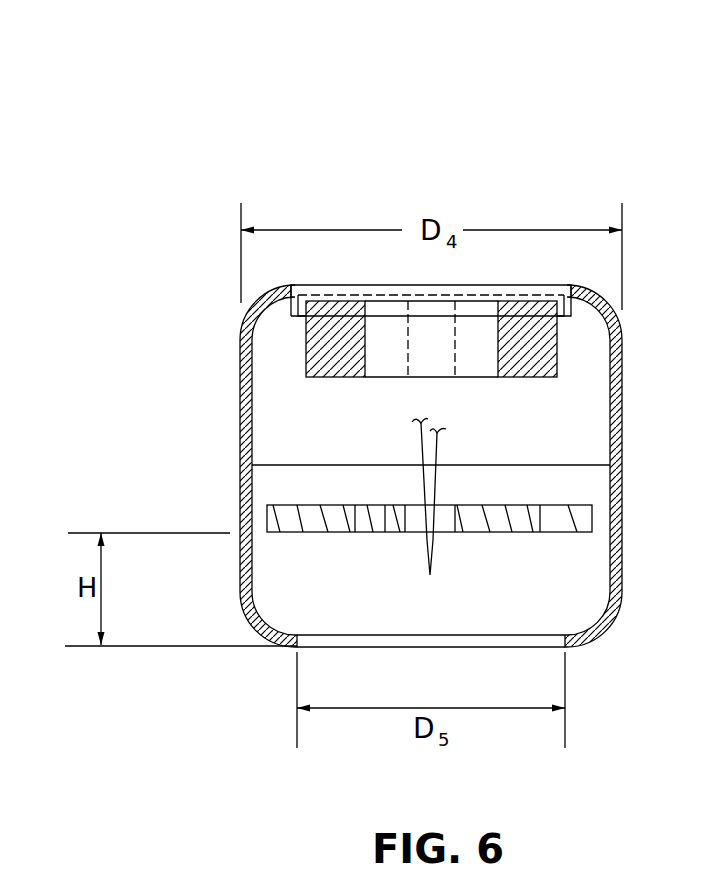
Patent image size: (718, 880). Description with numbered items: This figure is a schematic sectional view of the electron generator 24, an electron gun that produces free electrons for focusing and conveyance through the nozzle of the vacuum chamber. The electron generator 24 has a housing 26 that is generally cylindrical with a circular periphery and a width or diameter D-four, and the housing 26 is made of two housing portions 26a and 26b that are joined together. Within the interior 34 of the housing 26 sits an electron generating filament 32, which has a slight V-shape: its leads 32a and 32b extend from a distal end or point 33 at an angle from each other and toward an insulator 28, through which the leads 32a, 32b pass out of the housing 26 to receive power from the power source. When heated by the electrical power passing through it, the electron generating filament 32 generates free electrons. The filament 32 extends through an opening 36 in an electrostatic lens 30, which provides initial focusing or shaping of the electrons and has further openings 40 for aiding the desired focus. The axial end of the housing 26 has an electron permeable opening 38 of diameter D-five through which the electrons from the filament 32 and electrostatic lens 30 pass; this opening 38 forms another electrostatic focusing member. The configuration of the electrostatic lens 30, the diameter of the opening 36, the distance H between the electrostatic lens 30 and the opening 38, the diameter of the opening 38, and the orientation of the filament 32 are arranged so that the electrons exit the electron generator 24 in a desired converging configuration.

The electron generator 24 is at (526, 134).
The housing 26 is at (622, 427).
The housing portion 26a is at (240, 410).
The housing portion 26b is at (240, 582).
The insulator 28 is at (306, 362).
The electrostatic lens 30 is at (305, 505).
The electron generating filament 32 is at (437, 488).
The lead 32a is at (418, 443).
The lead 32b is at (442, 444).
The distal end or point 33 is at (430, 575).
The interior 34 is at (590, 384).
The opening 36 is at (413, 530).
The electron permeable opening 38 is at (337, 642).
The openings 40 is at (543, 528).